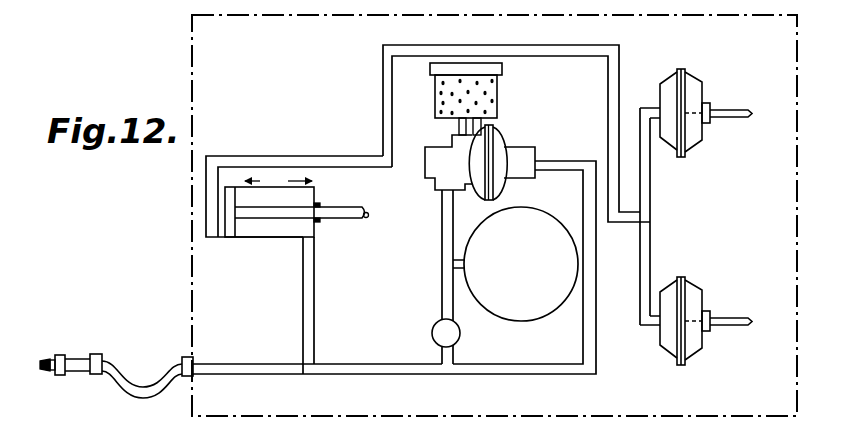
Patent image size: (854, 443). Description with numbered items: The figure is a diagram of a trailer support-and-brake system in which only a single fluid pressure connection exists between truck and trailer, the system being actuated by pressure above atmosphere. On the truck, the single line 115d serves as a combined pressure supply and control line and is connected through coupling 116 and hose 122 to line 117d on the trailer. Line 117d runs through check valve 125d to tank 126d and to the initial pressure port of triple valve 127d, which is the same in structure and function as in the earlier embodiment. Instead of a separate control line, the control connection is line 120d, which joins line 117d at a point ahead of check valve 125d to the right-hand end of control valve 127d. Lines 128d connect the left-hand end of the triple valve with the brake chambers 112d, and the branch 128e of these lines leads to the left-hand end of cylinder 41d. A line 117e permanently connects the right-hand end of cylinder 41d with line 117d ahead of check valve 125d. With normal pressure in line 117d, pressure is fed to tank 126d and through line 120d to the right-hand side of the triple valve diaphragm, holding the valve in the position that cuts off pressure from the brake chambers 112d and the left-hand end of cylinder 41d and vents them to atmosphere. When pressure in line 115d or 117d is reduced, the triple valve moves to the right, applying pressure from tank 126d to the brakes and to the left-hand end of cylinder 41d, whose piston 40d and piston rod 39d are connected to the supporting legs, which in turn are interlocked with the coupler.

The piston rod 39d is at (351, 210).
The piston 40d is at (228, 240).
The cylinder 41d is at (272, 240).
The brake chambers 112d is at (672, 140).
The single line on the truck 115d is at (47, 373).
The coupling 116 is at (80, 354).
The line on the trailer 117d is at (447, 238).
The line 117e is at (313, 298).
The line 120d is at (590, 192).
The hose 122 is at (140, 392).
The check valve 125d is at (432, 331).
The tank 126d is at (515, 264).
The triple valve 127d is at (506, 136).
The lines 128d is at (540, 33).
The conduit branch 128e is at (345, 138).